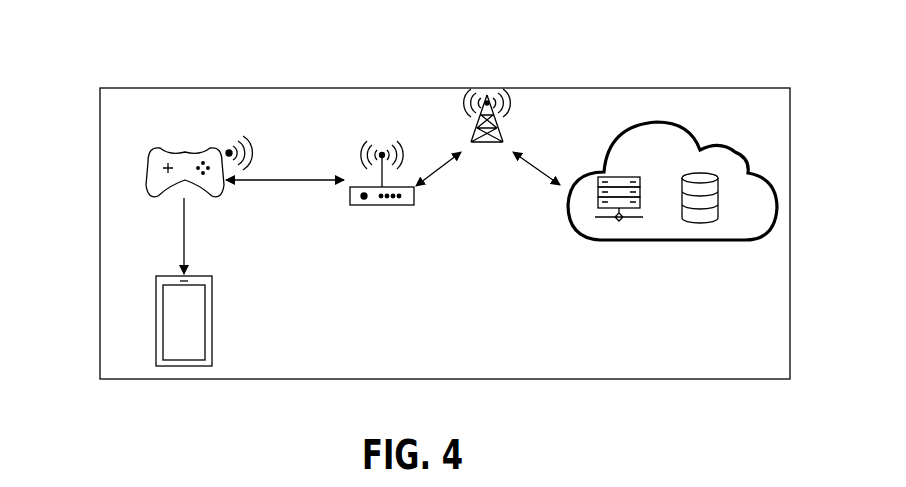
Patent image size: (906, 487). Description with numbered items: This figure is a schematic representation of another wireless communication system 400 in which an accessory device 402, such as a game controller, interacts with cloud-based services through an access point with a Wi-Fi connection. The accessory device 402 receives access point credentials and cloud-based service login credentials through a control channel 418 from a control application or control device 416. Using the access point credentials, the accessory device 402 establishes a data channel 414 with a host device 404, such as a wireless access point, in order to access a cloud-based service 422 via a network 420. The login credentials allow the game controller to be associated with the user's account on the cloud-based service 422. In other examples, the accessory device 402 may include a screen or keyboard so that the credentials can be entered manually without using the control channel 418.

The wireless communication system 400 is at (602, 62).
The accessory device 402 is at (147, 171).
The host device 404 is at (380, 206).
The data channel 414 is at (290, 179).
The control device 416 is at (156, 314).
The control channel 418 is at (185, 232).
The network 420 is at (486, 82).
The cloud-based service 422 is at (669, 243).